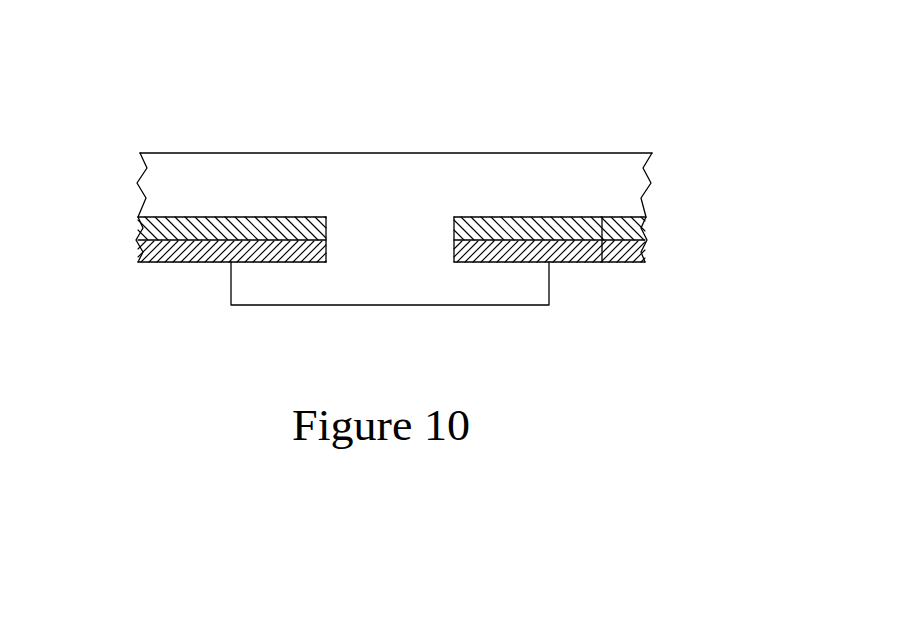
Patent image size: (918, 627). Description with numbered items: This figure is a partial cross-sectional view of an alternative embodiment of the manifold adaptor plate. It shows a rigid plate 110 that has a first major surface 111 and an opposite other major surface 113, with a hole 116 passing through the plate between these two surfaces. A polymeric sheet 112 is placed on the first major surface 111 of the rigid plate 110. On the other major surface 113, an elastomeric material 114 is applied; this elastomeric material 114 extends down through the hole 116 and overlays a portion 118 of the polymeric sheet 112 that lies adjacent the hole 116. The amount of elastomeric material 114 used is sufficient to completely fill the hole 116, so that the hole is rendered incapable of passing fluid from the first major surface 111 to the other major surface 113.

The rigid plate 110 is at (645, 228).
The first major surface 111 is at (602, 262).
The polymeric sheet 112 is at (645, 252).
The other major surface 113 is at (582, 216).
The elastomeric material 114 is at (220, 183).
The hole 116 is at (378, 238).
The portion of the sheet 118 is at (267, 288).